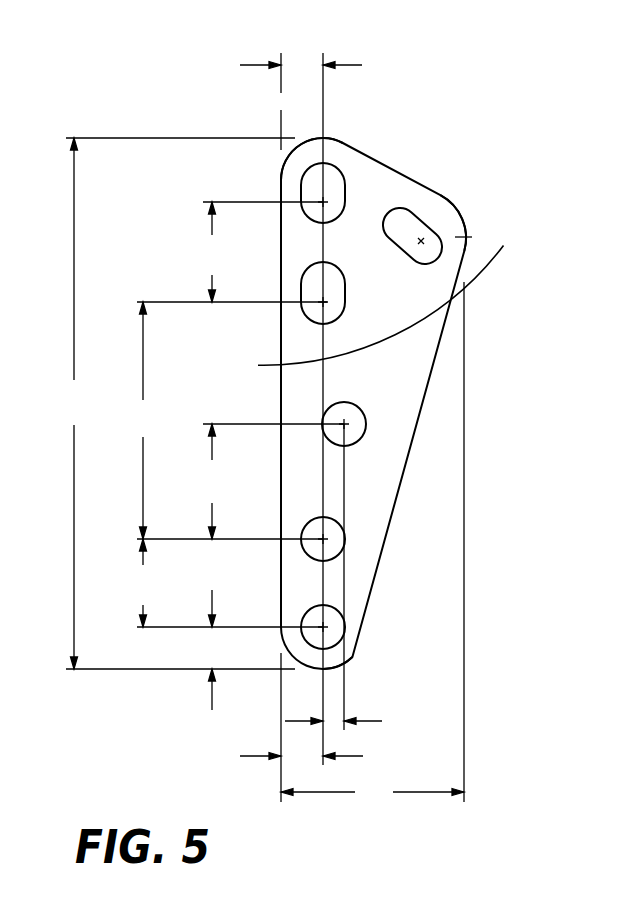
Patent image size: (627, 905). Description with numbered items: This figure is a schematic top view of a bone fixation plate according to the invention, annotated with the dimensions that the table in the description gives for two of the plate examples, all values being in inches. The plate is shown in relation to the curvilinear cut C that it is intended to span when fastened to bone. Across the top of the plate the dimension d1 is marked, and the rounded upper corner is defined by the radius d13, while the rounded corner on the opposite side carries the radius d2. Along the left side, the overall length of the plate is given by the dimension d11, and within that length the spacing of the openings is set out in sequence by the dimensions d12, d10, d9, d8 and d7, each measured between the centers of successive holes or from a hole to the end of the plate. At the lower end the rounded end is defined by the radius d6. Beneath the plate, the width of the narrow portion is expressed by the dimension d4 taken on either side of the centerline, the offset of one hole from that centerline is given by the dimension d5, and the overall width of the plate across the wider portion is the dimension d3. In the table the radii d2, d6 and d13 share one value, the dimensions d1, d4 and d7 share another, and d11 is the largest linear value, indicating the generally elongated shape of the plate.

The dimension d1 is at (301, 101).
The dimension d2 is at (467, 218).
The dimension d3 is at (372, 546).
The dimension d4 is at (301, 727).
The dimension d5 is at (350, 583).
The dimension d6 is at (353, 667).
The dimension d7 is at (212, 650).
The dimension d8 is at (226, 583).
The dimension d9 is at (271, 481).
The dimension d10 is at (224, 420).
The dimension d11 is at (176, 403).
The dimension d12 is at (232, 252).
The dimension d13 is at (304, 133).
The curvilinear cut C is at (495, 268).